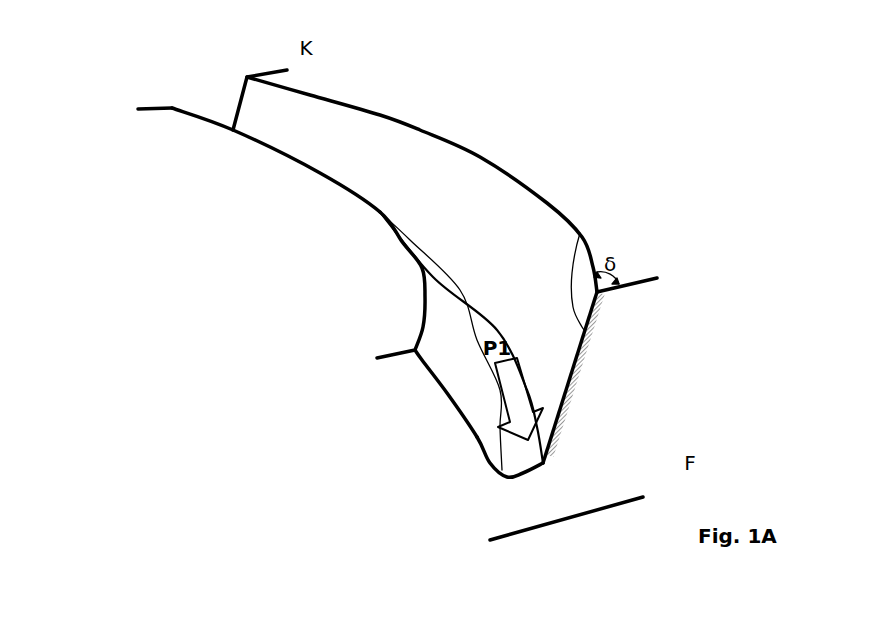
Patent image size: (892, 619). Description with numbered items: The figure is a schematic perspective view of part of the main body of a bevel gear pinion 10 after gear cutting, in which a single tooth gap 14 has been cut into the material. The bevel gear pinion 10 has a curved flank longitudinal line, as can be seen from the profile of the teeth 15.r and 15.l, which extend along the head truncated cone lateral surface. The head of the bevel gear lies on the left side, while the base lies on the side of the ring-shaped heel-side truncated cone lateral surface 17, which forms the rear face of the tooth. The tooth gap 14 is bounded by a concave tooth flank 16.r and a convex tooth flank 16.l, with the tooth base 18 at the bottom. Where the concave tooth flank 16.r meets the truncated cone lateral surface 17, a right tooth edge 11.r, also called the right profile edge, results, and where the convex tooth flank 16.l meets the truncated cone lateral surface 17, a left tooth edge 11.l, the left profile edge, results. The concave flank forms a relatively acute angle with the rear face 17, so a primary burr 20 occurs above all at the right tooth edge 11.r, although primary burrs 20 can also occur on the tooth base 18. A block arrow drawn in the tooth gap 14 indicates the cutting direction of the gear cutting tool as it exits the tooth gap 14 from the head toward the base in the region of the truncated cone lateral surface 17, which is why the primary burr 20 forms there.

The bevel gear pinion 10 is at (78, 19).
The tooth gap 14 is at (217, 78).
The left tooth 15.l is at (238, 155).
The right tooth 15.r is at (488, 132).
The convex tooth flank 16.l is at (432, 330).
The concave tooth flank 16.r is at (391, 137).
The left tooth edge 11.l is at (422, 358).
The right tooth edge 11.r is at (580, 233).
The tooth base 18 is at (528, 467).
The primary burr 20 is at (583, 360).
The truncated cone lateral surface 17 is at (592, 485).